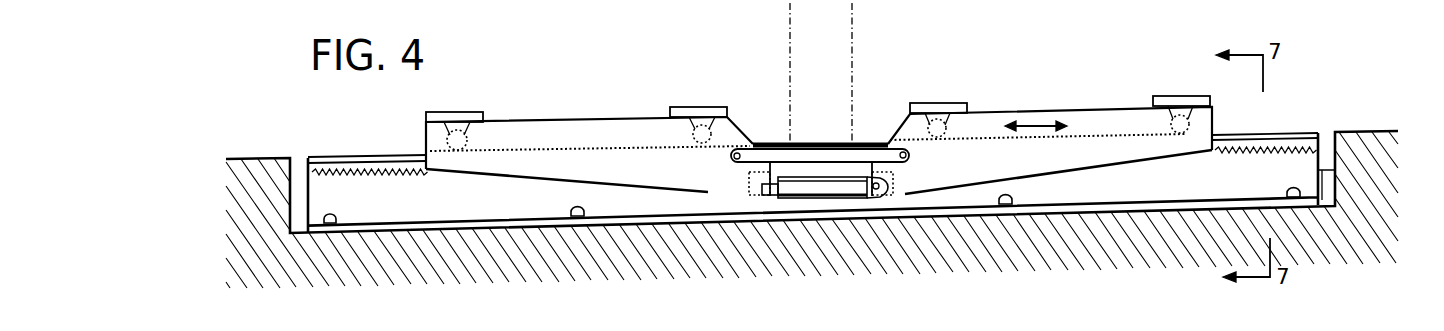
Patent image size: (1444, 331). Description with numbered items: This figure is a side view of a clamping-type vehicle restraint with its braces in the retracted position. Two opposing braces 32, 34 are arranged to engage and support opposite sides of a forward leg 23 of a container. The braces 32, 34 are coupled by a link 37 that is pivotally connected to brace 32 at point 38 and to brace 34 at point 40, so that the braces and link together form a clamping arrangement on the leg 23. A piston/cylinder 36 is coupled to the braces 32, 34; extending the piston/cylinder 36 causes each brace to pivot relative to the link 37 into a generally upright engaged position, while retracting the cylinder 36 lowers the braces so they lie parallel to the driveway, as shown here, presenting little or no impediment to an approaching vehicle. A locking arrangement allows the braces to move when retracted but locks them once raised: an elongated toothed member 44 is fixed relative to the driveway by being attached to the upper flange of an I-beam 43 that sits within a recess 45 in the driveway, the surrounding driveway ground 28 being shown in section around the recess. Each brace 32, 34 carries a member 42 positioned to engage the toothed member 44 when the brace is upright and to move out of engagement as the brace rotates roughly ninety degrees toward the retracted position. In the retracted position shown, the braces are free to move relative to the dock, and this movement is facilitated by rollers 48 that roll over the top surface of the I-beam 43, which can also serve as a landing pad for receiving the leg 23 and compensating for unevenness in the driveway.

The forward leg 23 is at (852, 100).
The pit in ground 28 is at (254, 158).
The brace 32 is at (522, 178).
The brace 34 is at (1077, 168).
The piston/cylinder 36 is at (825, 200).
The link 37 is at (777, 157).
The pivot point 38 is at (731, 156).
The pivot point 40 is at (909, 155).
The member 42 is at (748, 183).
The I-beam 43 is at (397, 153).
The elongated toothed member 44 is at (1283, 152).
The recess 45 is at (1318, 172).
The rollers 48 is at (467, 145).